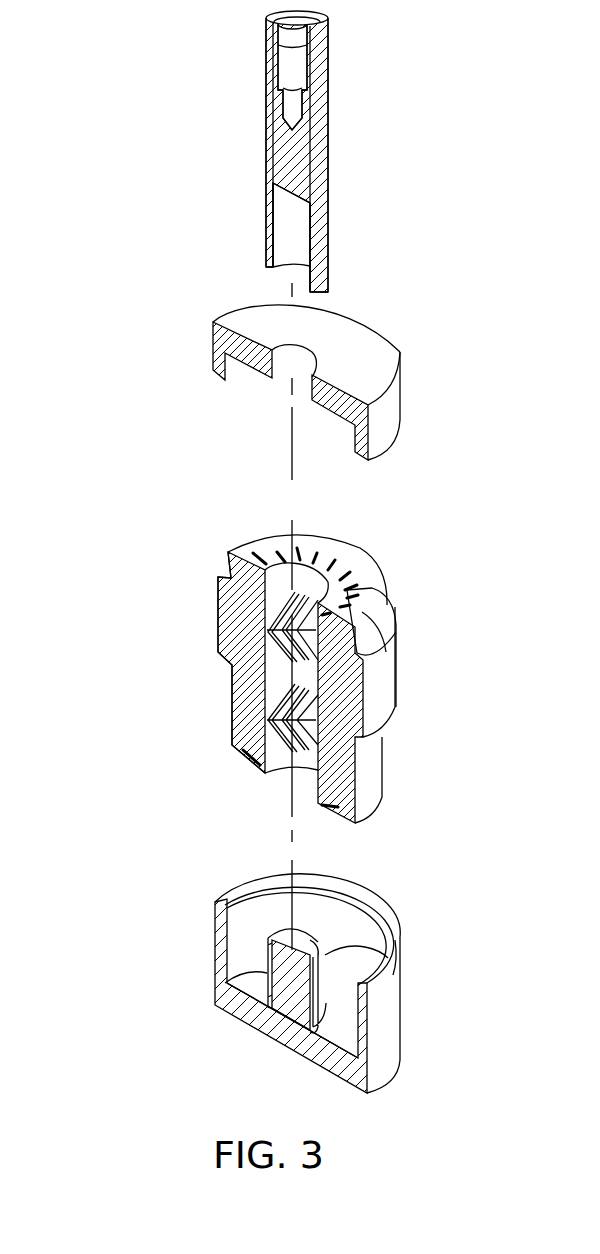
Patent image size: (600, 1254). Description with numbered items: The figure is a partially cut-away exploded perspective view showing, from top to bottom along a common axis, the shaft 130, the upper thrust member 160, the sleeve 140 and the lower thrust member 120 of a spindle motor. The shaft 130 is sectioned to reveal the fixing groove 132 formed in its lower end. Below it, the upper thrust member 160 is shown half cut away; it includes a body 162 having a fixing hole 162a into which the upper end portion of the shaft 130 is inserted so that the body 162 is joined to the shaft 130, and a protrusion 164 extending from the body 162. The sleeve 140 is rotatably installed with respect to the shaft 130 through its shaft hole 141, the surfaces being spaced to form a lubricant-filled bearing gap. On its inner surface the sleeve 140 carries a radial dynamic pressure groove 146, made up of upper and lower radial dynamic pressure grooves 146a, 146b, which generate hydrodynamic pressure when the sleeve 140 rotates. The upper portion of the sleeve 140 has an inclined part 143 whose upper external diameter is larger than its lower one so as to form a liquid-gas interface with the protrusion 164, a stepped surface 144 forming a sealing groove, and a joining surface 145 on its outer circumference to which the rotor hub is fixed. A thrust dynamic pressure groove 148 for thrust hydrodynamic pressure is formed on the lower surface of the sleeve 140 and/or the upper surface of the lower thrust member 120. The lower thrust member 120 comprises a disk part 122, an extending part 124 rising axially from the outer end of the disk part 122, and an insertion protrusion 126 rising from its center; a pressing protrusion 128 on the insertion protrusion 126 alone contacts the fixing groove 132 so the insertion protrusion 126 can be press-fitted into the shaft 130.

The lower thrust member 120 is at (259, 983).
The disk part 122 is at (262, 978).
The extending part 124 is at (222, 942).
The insertion protrusion 126 is at (292, 990).
The pressing protrusion 128 is at (380, 952).
The shaft 130 is at (234, 151).
The fixing groove 132 is at (290, 235).
The sleeve 140 is at (275, 661).
The shaft hole 141 is at (308, 581).
The inclined part 143 is at (370, 623).
The stepped surface 144 is at (370, 647).
The joining surface 145 is at (383, 690).
The radial dynamic pressure groove 146 is at (180, 672).
The upper radial dynamic pressure groove 146a is at (267, 630).
The lower radial dynamic pressure groove 146b is at (267, 717).
The thrust dynamic pressure groove 148 is at (353, 591).
The upper thrust member 160 is at (261, 364).
The body 162 is at (245, 356).
The fixing hole 162a is at (286, 346).
The protrusion 164 is at (222, 373).